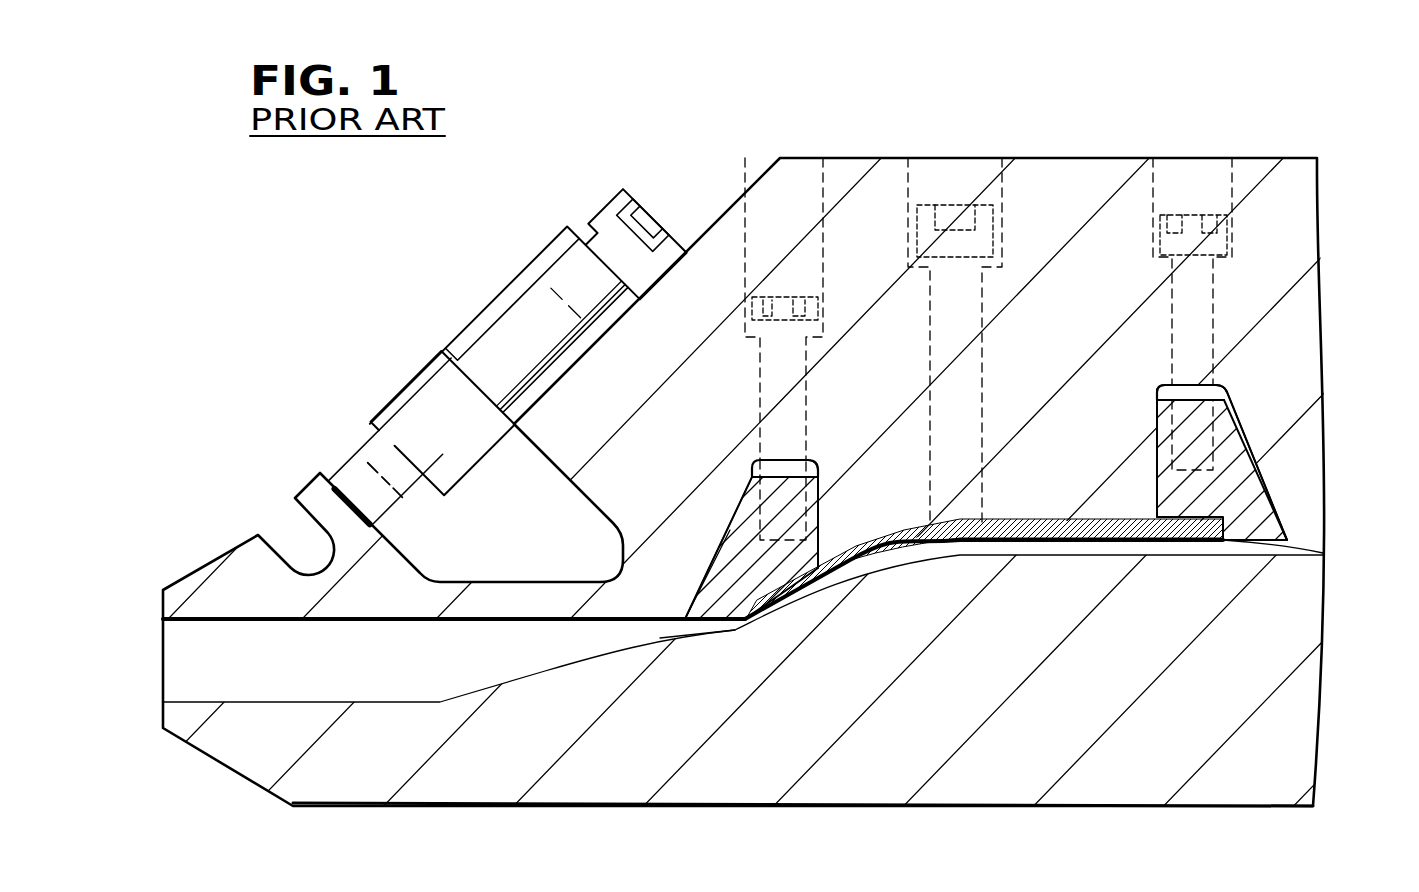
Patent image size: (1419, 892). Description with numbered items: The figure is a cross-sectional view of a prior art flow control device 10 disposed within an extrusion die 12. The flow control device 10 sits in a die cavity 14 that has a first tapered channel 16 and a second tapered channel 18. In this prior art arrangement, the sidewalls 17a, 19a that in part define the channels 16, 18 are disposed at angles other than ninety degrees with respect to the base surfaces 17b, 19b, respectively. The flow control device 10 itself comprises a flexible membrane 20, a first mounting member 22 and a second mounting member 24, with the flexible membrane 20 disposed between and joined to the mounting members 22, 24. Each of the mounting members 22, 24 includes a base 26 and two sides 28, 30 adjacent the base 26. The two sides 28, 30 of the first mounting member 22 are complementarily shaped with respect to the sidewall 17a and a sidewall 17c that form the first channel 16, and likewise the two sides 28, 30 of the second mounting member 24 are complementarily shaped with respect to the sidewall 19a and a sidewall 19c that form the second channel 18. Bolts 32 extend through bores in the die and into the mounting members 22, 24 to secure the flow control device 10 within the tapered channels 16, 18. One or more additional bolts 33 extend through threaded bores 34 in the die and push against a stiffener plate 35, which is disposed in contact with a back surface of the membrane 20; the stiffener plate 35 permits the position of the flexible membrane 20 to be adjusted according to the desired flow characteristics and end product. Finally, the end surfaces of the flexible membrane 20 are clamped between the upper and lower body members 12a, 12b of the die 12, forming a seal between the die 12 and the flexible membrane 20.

The flow control device 10 is at (735, 630).
The extrusion die 12 is at (722, 190).
The upper body member 12a is at (1312, 218).
The lower body member 12b is at (962, 717).
The die cavity 14 is at (940, 545).
The first tapered channel 16 is at (768, 470).
The sidewall 17a is at (733, 527).
The base surface 17b is at (805, 473).
The sidewall 17c is at (818, 525).
The second tapered channel 18 is at (1200, 382).
The sidewall 19a is at (1235, 417).
The base surface 19b is at (1167, 380).
The sidewall 19c is at (1157, 503).
The flexible membrane 20 is at (1318, 553).
The first mounting member 22 is at (747, 502).
The second mounting member 24 is at (1232, 465).
The base 26 is at (753, 470).
The side 28 is at (705, 568).
The side 30 is at (823, 490).
The bolts 32 is at (795, 297).
The additional bolts 33 is at (950, 203).
The threaded bores 34 is at (972, 205).
The stiffener plate 35 is at (1058, 538).